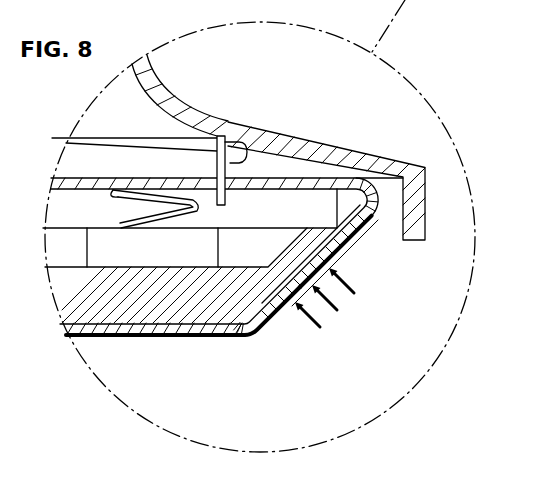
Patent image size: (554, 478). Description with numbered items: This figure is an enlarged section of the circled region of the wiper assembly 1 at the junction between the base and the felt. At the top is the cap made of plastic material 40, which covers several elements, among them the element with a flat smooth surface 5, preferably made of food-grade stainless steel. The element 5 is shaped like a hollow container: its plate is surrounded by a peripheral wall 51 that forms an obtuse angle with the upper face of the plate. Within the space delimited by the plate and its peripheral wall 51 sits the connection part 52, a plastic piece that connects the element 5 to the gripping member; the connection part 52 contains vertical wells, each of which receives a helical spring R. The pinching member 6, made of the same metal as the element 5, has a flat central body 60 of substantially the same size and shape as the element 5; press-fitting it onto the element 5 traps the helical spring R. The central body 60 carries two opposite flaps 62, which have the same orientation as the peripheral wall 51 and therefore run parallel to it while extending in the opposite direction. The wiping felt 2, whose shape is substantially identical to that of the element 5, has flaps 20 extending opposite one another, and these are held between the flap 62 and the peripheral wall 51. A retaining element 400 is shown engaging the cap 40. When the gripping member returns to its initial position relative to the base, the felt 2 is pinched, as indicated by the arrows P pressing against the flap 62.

The mobile terminal / electronic device 1 is at (291, 85).
The wiping felt 2 is at (128, 340).
The element with a flat smooth surface 5 is at (207, 337).
The pinching member 6 is at (299, 174).
The flaps of the felt 20 is at (272, 322).
The cap made of plastic material 40 is at (364, 152).
The peripheral wall 51 is at (277, 307).
The connection part 52 is at (170, 307).
The flat central body 60 is at (110, 178).
The flaps of the pinching member 62 is at (349, 241).
The hook / engaging pin 400 is at (232, 162).
The helical spring R is at (156, 202).
The arrows indicating pinching P is at (324, 297).